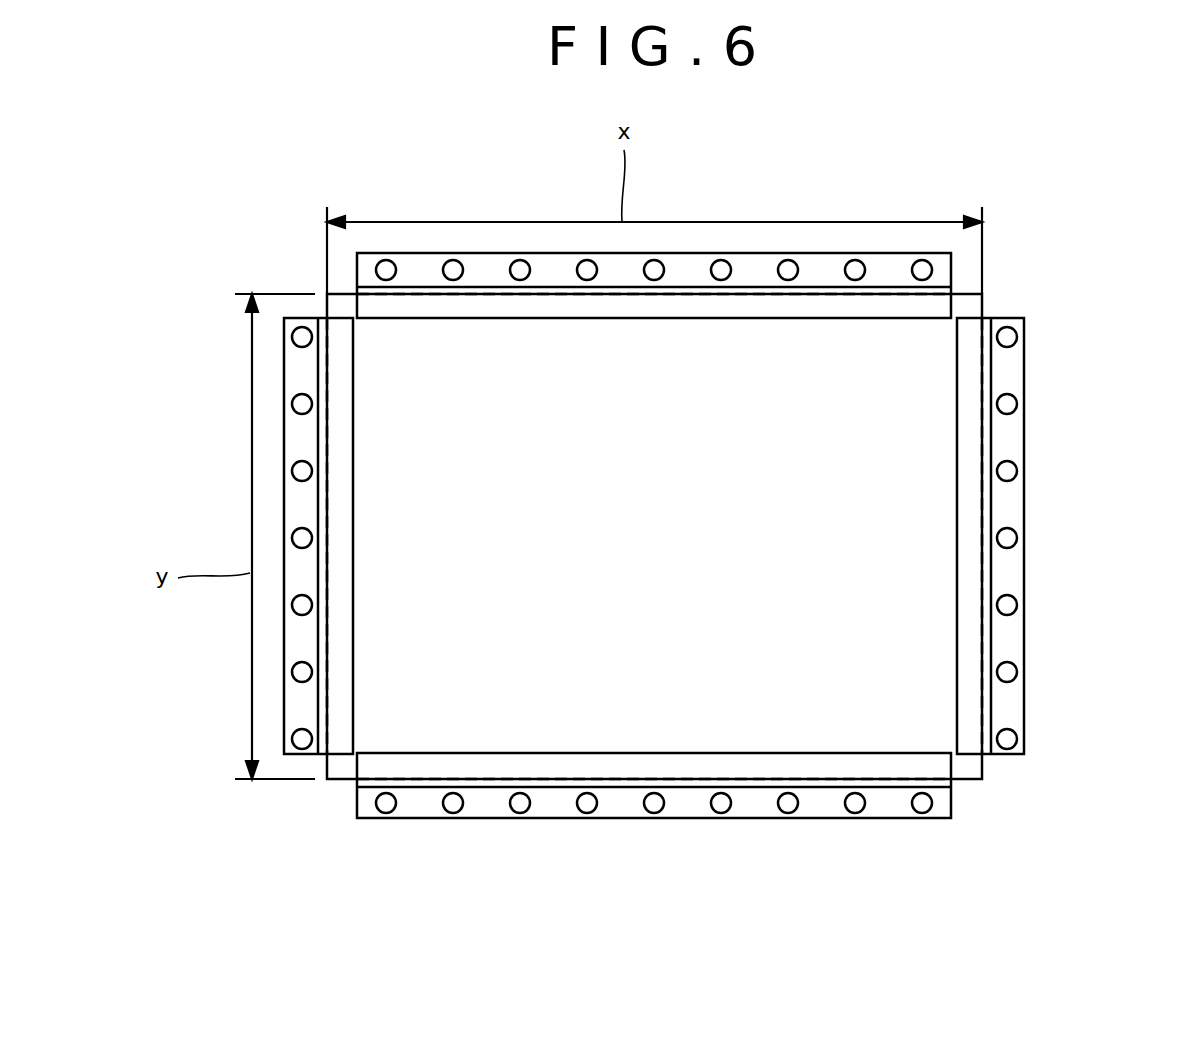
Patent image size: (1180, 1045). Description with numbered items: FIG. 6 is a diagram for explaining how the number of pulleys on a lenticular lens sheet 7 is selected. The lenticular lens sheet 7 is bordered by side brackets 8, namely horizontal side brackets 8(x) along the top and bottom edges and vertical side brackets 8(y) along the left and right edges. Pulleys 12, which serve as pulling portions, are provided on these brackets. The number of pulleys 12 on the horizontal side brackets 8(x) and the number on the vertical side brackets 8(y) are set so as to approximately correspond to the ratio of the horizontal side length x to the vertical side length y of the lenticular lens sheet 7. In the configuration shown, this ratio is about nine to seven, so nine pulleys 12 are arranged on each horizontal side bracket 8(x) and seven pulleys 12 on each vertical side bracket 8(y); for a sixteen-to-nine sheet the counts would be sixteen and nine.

The lenticular lens sheet 7 is at (562, 693).
The side bracket 8 is at (686, 268).
The pulley 12 is at (385, 260).